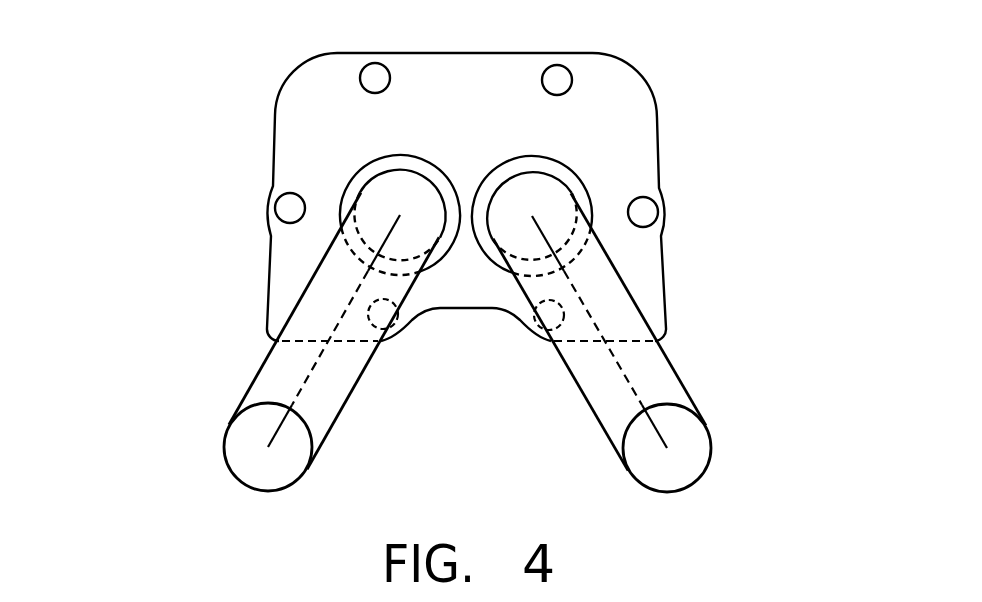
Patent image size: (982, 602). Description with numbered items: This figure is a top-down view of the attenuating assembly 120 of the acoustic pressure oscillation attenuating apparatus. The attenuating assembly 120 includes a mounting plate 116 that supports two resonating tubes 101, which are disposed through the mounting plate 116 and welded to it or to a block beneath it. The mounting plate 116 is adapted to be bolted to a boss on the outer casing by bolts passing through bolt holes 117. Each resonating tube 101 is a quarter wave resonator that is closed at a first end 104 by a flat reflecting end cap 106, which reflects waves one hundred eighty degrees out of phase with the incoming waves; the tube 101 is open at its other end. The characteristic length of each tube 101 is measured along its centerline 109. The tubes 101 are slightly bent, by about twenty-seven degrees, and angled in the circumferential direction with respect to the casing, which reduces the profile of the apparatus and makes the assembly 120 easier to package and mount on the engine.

The resonating tube 101 is at (353, 389).
The first end 104 is at (263, 405).
The flat reflecting end cap 106 is at (238, 446).
The centerline 109 is at (337, 320).
The mounting plate 116 is at (445, 66).
The bolt holes 117 is at (377, 70).
The attenuating assembly 120 is at (624, 125).